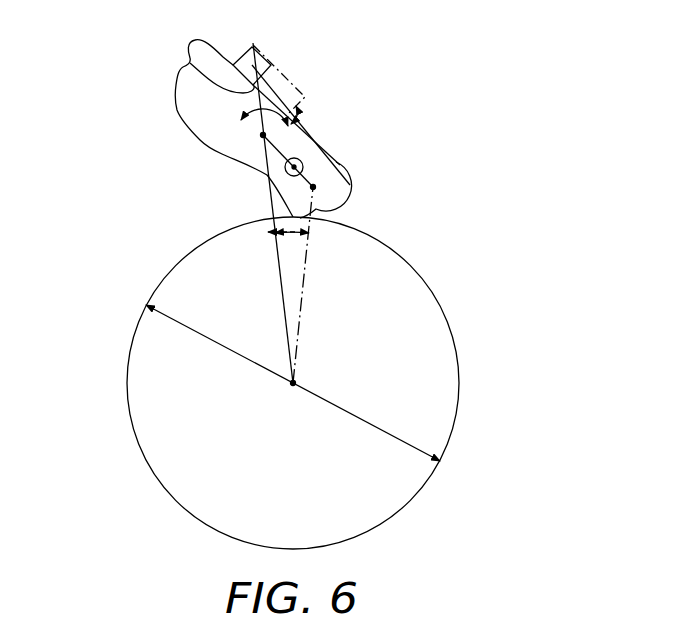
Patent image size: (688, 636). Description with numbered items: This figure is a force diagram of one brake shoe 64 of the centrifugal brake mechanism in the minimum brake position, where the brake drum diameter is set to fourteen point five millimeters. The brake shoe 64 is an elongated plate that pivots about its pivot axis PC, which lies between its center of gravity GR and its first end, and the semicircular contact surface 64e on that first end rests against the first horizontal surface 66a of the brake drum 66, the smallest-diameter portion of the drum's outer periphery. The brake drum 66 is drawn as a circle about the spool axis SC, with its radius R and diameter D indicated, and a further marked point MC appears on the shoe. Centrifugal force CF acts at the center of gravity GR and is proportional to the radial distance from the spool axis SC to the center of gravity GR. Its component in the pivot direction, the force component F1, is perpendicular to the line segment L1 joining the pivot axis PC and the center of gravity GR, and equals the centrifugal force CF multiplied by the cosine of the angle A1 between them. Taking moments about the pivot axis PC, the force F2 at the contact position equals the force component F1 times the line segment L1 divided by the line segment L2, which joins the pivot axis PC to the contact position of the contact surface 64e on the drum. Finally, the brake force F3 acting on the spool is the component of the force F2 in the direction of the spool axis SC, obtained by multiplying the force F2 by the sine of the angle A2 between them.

The brake shoe 64 is at (165, 92).
The contact surface 64e is at (330, 212).
The brake drum 66 is at (470, 343).
The first horizontal surface 66a is at (423, 277).
The centrifugal force CF is at (190, 58).
The center of gravity GR is at (263, 135).
The pivot axis PC is at (301, 160).
The mass center MC is at (316, 185).
The spool axis SC is at (296, 382).
The radius R is at (280, 283).
The diameter D is at (293, 383).
The angle A1 is at (287, 97).
The angle A2 is at (315, 240).
The force component F1 is at (292, 110).
The force F2 is at (290, 215).
The brake force F3 is at (322, 218).
The line segment L1 is at (300, 135).
The line segment L2 is at (320, 178).